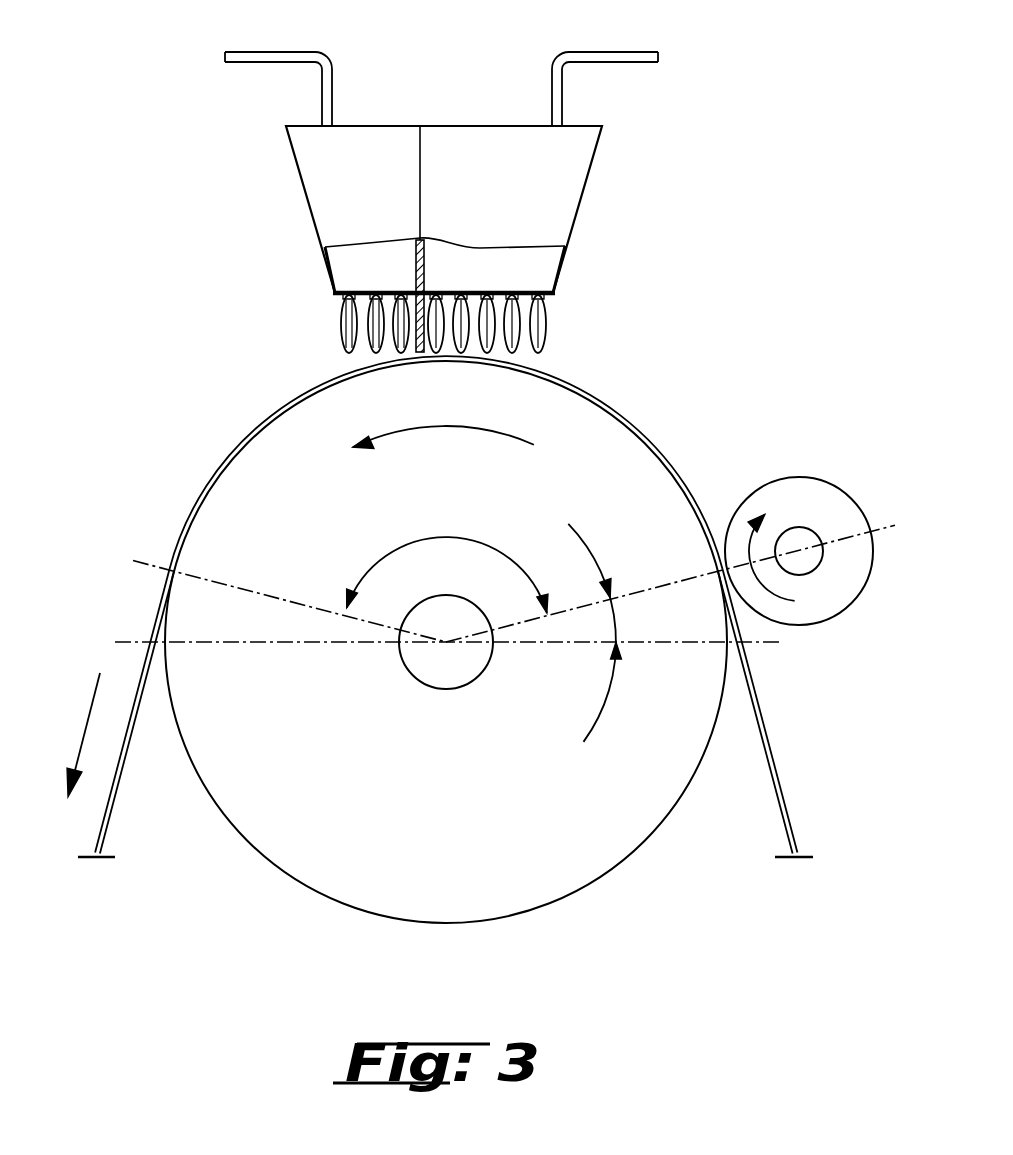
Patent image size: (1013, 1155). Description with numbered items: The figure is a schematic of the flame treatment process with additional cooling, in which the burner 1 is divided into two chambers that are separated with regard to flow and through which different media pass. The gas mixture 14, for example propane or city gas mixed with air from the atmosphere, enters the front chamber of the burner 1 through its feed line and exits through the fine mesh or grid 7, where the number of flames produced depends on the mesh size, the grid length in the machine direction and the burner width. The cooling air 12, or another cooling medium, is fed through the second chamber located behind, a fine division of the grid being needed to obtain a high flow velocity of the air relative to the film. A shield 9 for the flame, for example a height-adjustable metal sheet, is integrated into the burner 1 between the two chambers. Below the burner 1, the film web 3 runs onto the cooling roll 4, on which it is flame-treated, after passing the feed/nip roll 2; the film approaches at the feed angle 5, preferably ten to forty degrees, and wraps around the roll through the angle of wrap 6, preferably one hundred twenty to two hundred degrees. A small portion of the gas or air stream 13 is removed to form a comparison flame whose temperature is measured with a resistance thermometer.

The burner 1 is at (553, 176).
The feed/nip roll 2 is at (808, 503).
The web 3 is at (778, 758).
The cooling roll 4 is at (308, 783).
The feed angle 5 is at (615, 620).
The angle of wrap 6 is at (408, 543).
The grid 7 is at (543, 290).
The shield 9 is at (422, 330).
The cooling air 12 is at (222, 57).
The gas or air stream 13 is at (350, 323).
The gas mixture 14 is at (662, 58).